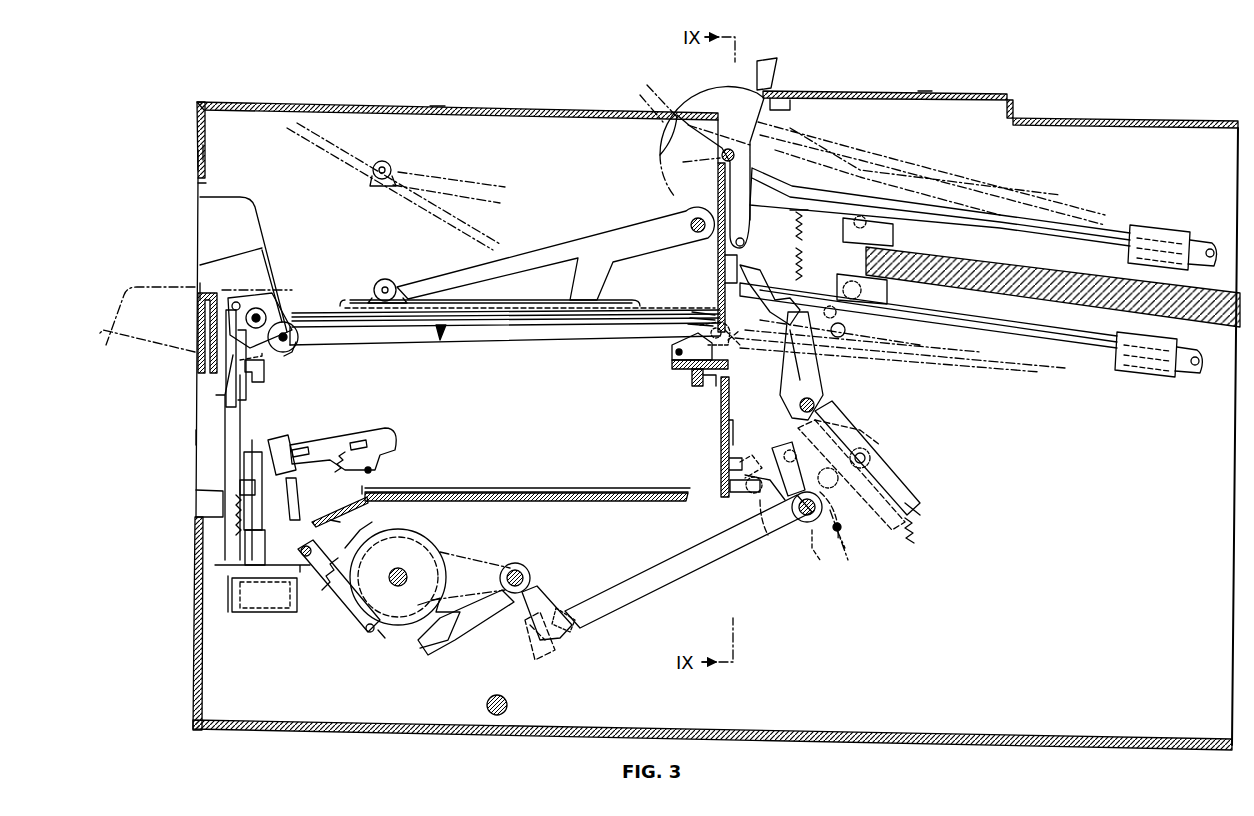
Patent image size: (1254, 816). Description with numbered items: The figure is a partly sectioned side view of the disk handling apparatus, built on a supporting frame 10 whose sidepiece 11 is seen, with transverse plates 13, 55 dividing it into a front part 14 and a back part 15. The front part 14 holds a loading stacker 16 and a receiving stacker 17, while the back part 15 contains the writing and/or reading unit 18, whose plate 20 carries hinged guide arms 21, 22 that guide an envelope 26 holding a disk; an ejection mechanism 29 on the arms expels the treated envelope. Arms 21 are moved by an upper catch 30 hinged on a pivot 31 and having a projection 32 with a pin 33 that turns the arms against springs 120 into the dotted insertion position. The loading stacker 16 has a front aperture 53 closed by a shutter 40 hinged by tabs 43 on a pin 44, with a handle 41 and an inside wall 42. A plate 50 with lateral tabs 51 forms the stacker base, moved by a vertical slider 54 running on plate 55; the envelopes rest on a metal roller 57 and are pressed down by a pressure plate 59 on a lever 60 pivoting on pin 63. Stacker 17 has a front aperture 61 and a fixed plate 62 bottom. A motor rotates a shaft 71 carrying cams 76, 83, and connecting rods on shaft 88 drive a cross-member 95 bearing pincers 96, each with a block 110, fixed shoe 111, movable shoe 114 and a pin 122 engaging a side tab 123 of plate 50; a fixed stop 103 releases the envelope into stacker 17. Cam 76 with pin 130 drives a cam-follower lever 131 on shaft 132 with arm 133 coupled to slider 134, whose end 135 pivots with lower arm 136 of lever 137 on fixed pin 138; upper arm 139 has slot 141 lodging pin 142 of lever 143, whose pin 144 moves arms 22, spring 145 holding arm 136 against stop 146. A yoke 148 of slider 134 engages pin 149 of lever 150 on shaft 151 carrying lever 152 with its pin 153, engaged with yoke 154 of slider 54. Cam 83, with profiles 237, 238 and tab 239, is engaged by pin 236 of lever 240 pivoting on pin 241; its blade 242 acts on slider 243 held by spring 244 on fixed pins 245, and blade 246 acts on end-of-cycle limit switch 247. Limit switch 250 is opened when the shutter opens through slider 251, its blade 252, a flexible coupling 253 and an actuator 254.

The supporting frame 10 is at (522, 110).
The sidepiece 11 is at (1185, 126).
The transverse plate 13 is at (717, 259).
The front part 14 is at (438, 104).
The back part 15 is at (925, 88).
The loading stacker 16 is at (195, 160).
The receiving stacker 17 is at (190, 437).
The writing and/or reading unit 18 is at (962, 372).
The plate 20 is at (1010, 266).
The guide arm 21 is at (850, 202).
The guide arm 22 is at (976, 324).
The envelope 26 is at (440, 342).
The automatic ejection mechanism 29 is at (1165, 234).
The upper catch 30 is at (725, 96).
The pivot 31 is at (722, 153).
The projection 32 is at (748, 220).
The pin 33 is at (745, 243).
The shutter 40 is at (203, 230).
The handle 41 is at (203, 190).
The inside wall 42 is at (270, 254).
The tabs 43 is at (262, 294).
The pin 44 is at (290, 292).
The plate 50 is at (490, 338).
The lateral tabs 51 is at (260, 370).
The front aperture 53 is at (207, 150).
The vertical slider 54 is at (729, 405).
The transverse plate 55 is at (721, 431).
The metal roller 57 is at (287, 352).
The pressure plate 59 is at (524, 304).
The lever 60 is at (594, 243).
The front aperture 61 is at (200, 396).
The fixed plate 62 is at (603, 490).
The pin 63 is at (691, 220).
The shaft 71 is at (396, 576).
The cam 76 is at (440, 563).
The cam 83 is at (373, 503).
The shaft 88 is at (507, 705).
The cross-member 95 is at (690, 380).
The pincers 96 is at (668, 358).
The fixed stop 103 is at (296, 350).
The bottom block 110 is at (672, 366).
The fixed rubber shoe 111 is at (734, 348).
The movable rubber shoe 114 is at (712, 388).
The springs 120 is at (772, 284).
The pin 122 is at (716, 323).
The side tab 123 is at (690, 318).
The pin 130 is at (420, 628).
The cam-follower lever 131 is at (465, 625).
The shaft 132 is at (525, 577).
The fixed arm 133 is at (542, 608).
The slider 134 is at (688, 560).
The end 135 is at (866, 446).
The lower arm 136 is at (895, 490).
The lever 137 is at (824, 384).
The fixed pin 138 is at (830, 409).
The upper arm 139 is at (812, 258).
The slot 141 is at (794, 350).
The pin 142 is at (800, 280).
The lever 143 is at (840, 282).
The pin 144 is at (717, 286).
The spring 145 is at (908, 527).
The fixed stop 146 is at (838, 533).
The yoke 148 is at (780, 442).
The pin 149 is at (856, 430).
The lever 150 is at (772, 525).
The shaft 151 is at (814, 522).
The lever 152 is at (795, 514).
The bracket 153 is at (744, 518).
The yoke 154 is at (721, 463).
The pin 236 is at (366, 634).
The profile 237 is at (342, 556).
The profile 238 is at (391, 529).
The tab 239 is at (383, 640).
The lever 240 is at (328, 592).
The fixed pin 241 is at (335, 520).
The blade 242 is at (300, 486).
The slider 243 is at (375, 430).
The spring 244 is at (370, 474).
The fixed pins 245 is at (355, 440).
The blade 246 is at (215, 563).
The end-of-cycle limit switch 247 is at (232, 606).
The limit switch 250 is at (262, 608).
The slider 251 is at (242, 426).
The blade 252 is at (278, 426).
The flexible coupling 253 is at (206, 487).
The actuator 254 is at (246, 548).